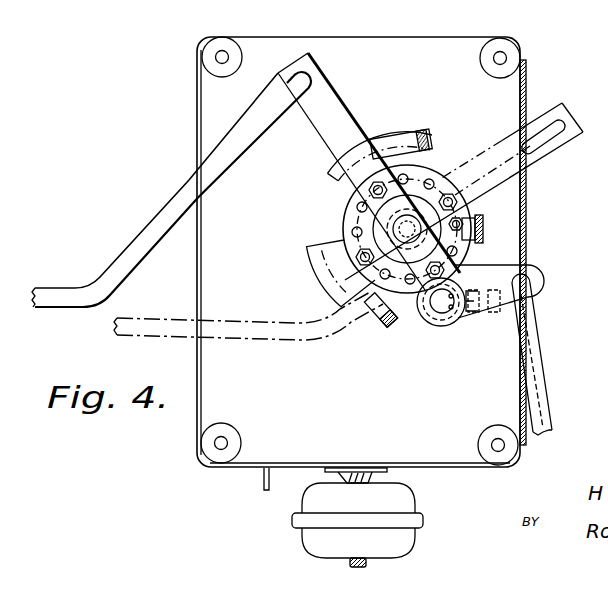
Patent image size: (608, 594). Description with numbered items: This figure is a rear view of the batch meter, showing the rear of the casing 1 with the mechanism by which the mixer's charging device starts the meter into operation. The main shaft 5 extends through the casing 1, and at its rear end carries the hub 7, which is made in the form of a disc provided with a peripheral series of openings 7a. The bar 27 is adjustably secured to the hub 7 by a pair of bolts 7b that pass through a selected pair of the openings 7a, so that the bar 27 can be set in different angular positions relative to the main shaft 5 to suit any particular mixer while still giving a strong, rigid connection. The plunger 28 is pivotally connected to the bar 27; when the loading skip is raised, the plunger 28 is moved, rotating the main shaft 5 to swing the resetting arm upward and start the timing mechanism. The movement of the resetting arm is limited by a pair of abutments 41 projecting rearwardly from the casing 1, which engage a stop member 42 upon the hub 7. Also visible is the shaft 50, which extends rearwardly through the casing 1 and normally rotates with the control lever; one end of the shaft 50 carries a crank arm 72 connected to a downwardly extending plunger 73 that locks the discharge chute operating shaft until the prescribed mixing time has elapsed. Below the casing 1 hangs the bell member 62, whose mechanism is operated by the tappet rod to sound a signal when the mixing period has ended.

The casing 1 is at (421, 37).
The bar 27 is at (338, 105).
The plunger 28 is at (112, 260).
The abutments 41 is at (412, 130).
The stop member 42 is at (324, 277).
The hub 7 is at (342, 222).
The openings 7a is at (434, 160).
The bolts 7b is at (348, 178).
The main shaft 5 is at (340, 233).
The shaft 50 is at (438, 328).
The crank arm 72 is at (532, 272).
The plunger 73 is at (539, 360).
The bell member 62 is at (302, 512).